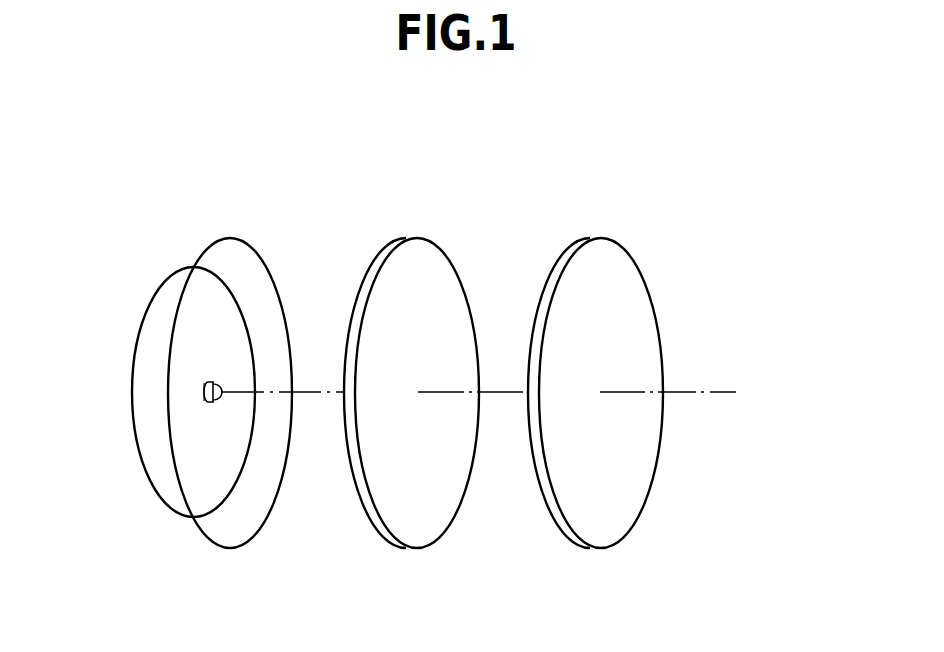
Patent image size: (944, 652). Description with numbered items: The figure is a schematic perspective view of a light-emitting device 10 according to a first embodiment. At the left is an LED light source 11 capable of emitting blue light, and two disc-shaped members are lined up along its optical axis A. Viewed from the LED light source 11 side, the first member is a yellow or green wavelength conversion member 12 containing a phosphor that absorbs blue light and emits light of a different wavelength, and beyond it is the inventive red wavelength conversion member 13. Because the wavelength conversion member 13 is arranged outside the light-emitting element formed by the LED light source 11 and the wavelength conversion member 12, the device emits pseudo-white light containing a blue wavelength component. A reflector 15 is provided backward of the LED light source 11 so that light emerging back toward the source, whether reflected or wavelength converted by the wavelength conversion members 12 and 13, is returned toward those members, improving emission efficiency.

The light-emitting device 10 is at (221, 356).
The LED light source 11 is at (220, 400).
The wavelength conversion member 12 is at (424, 238).
The wavelength conversion member 13 is at (605, 238).
The reflector 15 is at (218, 302).
The optical axis A is at (712, 392).